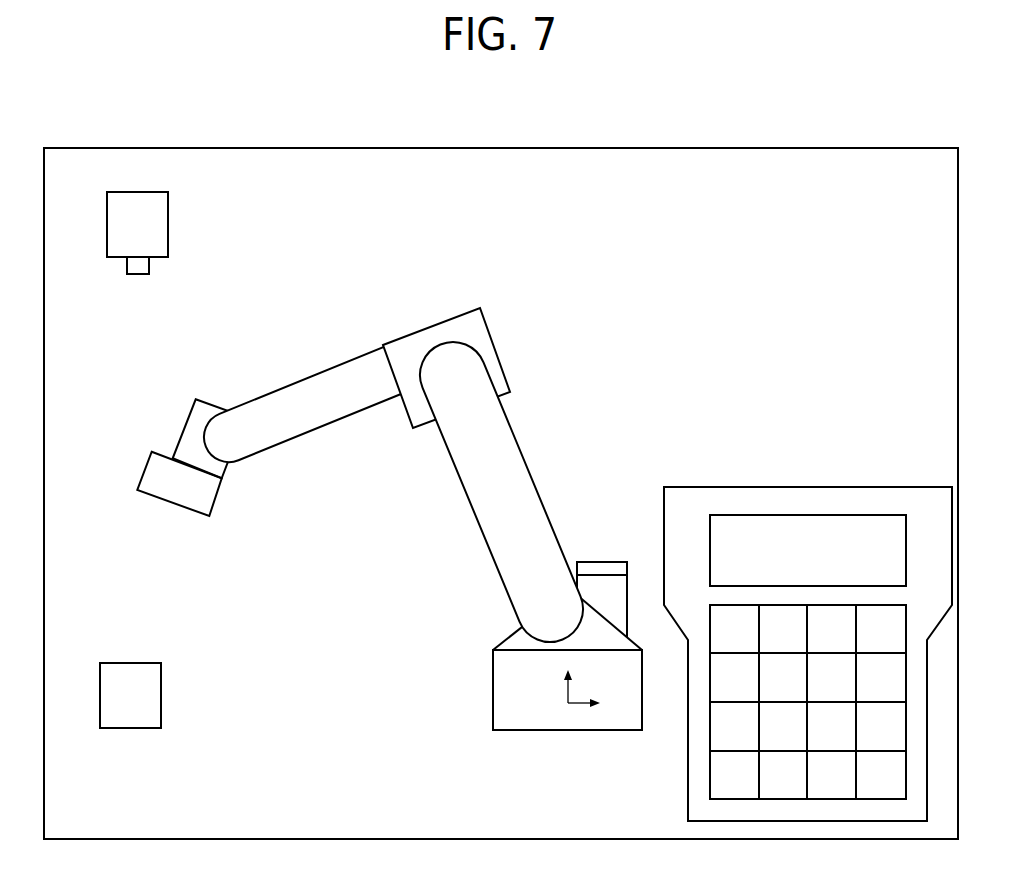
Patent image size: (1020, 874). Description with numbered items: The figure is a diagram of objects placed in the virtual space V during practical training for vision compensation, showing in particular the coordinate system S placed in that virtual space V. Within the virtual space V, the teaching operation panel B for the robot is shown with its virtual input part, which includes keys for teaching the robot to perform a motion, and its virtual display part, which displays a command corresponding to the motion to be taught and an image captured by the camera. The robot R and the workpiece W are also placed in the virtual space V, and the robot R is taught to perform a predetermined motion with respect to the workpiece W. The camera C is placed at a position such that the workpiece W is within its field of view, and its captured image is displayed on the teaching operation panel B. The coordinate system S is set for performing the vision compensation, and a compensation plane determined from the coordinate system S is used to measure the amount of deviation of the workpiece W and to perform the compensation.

The virtual space V is at (486, 148).
The camera C is at (168, 219).
The robot R is at (284, 388).
The teaching operation panel B is at (718, 487).
The workpiece W is at (132, 670).
The coordinate system S is at (568, 703).